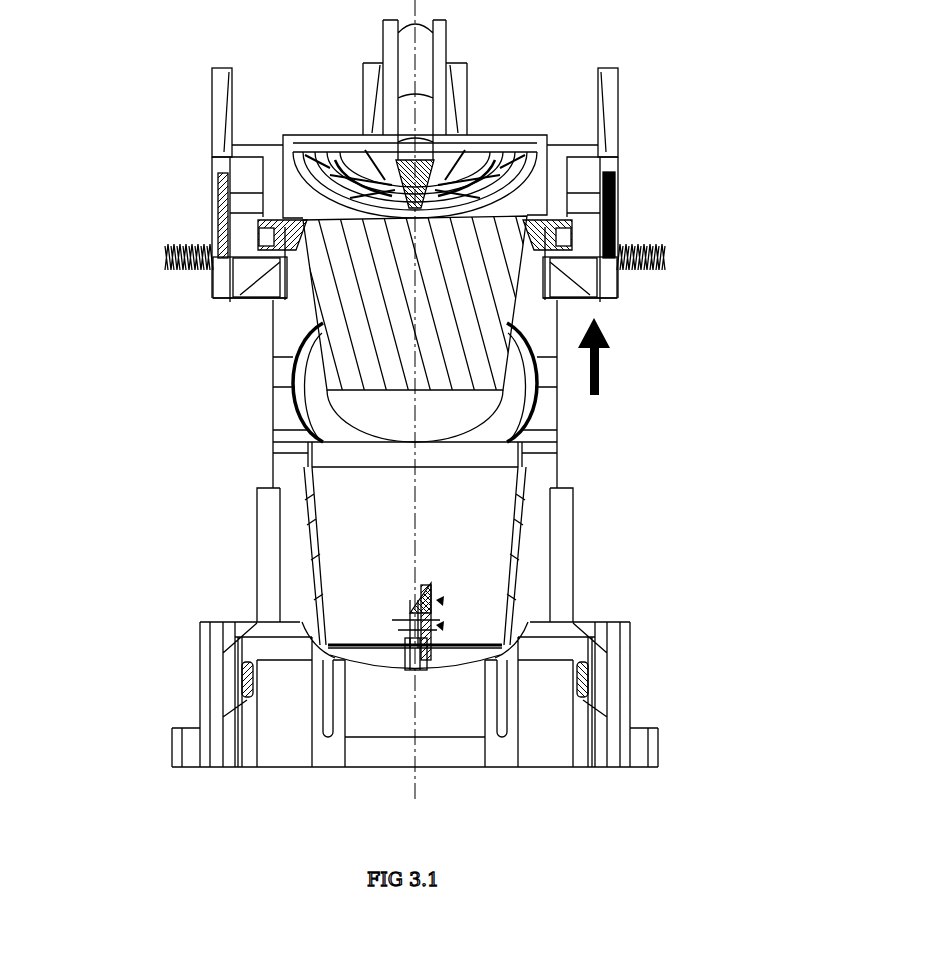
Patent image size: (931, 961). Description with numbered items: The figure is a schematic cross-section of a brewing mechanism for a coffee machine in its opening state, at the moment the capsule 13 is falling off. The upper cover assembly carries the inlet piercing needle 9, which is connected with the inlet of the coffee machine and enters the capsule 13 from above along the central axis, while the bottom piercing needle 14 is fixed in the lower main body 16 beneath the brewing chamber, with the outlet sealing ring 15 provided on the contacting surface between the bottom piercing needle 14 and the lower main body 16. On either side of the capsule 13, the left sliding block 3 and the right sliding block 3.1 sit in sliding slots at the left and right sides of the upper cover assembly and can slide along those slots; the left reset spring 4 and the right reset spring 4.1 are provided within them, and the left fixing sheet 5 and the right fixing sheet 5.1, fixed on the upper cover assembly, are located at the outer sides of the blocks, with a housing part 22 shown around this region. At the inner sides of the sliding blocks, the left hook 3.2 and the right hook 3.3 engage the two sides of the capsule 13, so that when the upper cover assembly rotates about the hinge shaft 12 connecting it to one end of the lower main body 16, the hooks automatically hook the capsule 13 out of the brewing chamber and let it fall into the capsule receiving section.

The inlet piercing needle 9 is at (458, 135).
The housing 22 is at (283, 188).
The left fixing sheet 5 is at (214, 202).
The right fixing sheet 5.1 is at (616, 172).
The left reset spring 4 is at (168, 247).
The right reset spring 4.1 is at (660, 240).
The left sliding block 3 is at (250, 252).
The right sliding block 3.1 is at (600, 270).
The left hook 3.2 is at (290, 238).
The right hook 3.3 is at (575, 265).
The capsule 13 is at (535, 368).
The hinge shaft 12 is at (247, 707).
The bottom piercing needle 14 is at (432, 597).
The outlet sealing ring 15 is at (437, 640).
The lower main body 16 is at (640, 748).